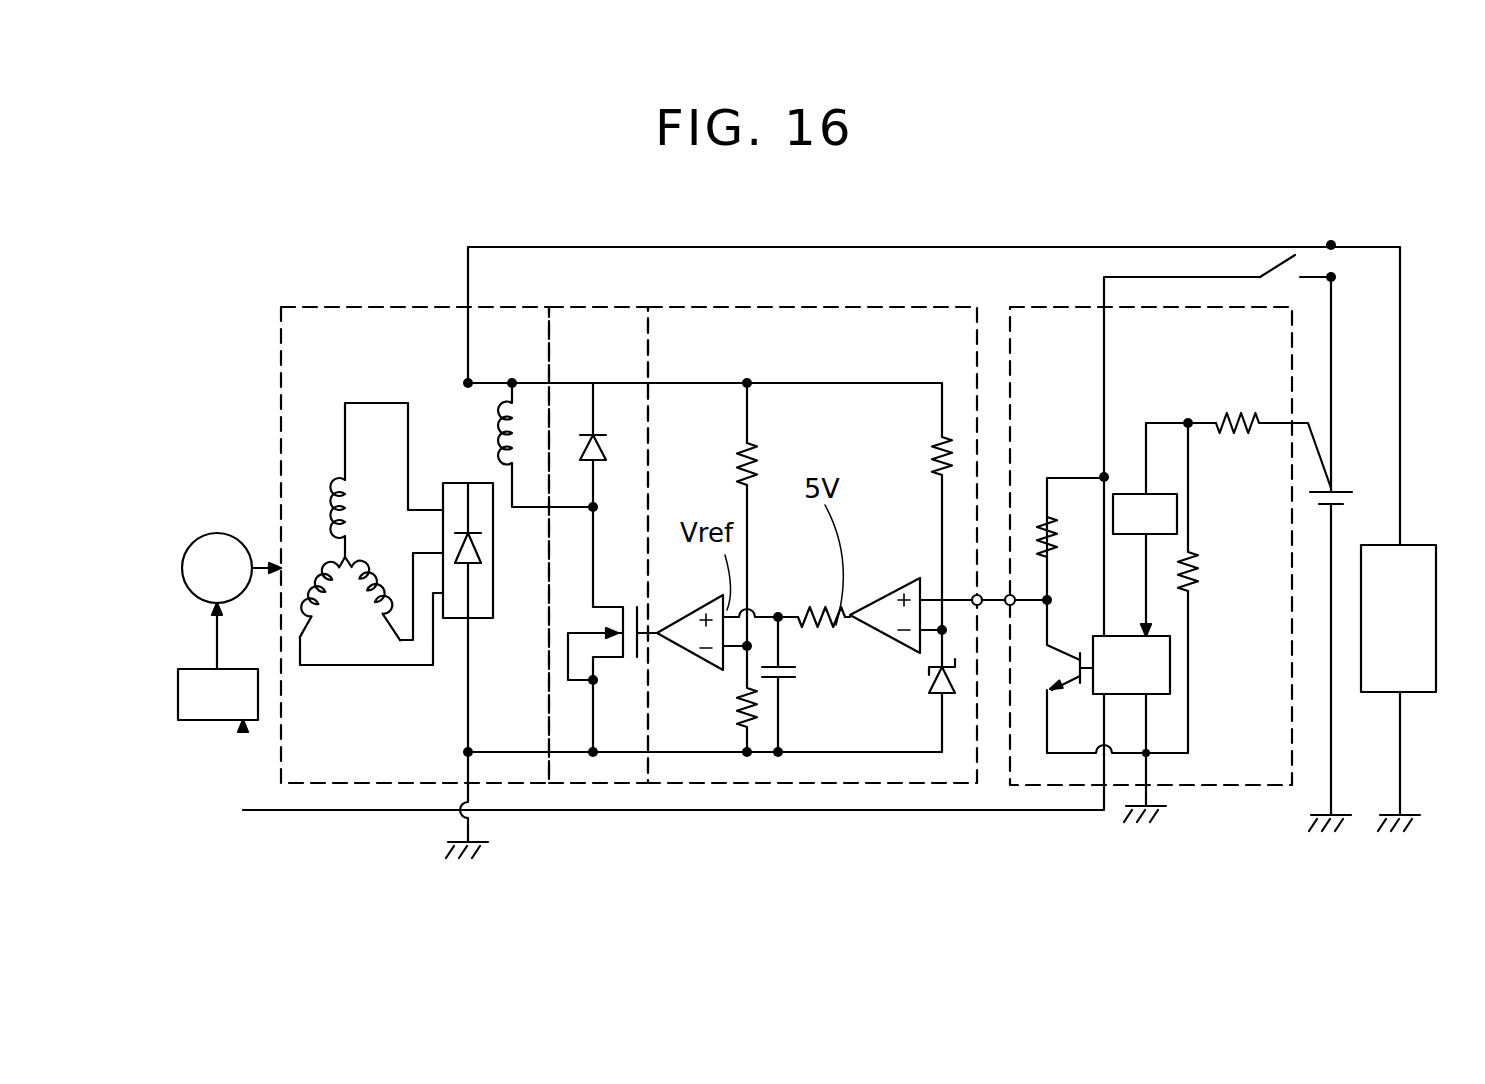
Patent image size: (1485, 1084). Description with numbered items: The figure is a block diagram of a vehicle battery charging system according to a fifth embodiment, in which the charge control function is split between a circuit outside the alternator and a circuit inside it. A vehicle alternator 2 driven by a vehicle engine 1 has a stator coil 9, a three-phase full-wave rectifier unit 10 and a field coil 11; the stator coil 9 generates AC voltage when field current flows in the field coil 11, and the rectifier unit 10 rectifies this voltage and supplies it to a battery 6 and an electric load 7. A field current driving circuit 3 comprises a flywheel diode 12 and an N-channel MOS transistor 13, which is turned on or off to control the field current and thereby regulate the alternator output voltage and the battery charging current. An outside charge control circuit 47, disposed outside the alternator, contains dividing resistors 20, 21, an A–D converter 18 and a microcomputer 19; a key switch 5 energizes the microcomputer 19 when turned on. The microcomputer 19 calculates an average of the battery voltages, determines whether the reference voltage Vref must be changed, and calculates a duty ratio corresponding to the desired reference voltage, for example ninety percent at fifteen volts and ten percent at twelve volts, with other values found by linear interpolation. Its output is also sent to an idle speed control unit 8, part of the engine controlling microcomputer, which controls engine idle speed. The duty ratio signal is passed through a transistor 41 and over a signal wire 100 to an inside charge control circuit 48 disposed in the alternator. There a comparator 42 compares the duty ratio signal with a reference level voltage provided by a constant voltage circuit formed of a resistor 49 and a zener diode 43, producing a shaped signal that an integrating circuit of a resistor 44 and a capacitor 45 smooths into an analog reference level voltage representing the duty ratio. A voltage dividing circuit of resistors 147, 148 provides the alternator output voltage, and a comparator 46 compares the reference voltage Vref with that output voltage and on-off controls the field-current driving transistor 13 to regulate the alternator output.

The vehicle engine 1 is at (208, 532).
The vehicle alternator 2 is at (281, 350).
The field current driving circuit 3 is at (630, 305).
The key switch 5 is at (1288, 262).
The battery 6 is at (1337, 480).
The electric load 7 is at (1405, 545).
The idle speed control unit 8 is at (192, 720).
The stator coil 9 is at (350, 665).
The three-phase full-wave rectifier unit 10 is at (480, 618).
The field coil 11 is at (498, 437).
The flywheel diode 12 is at (608, 440).
The N-channel MOS transistor 13 is at (600, 600).
The A–D converter 18 is at (1177, 512).
The microcomputer 19 is at (1170, 667).
The dividing resistor 20 is at (1225, 423).
The dividing resistor 21 is at (1195, 590).
The transistor 41 is at (1060, 648).
The comparator 42 is at (900, 585).
The zener diode 43 is at (935, 700).
The resistor 44 is at (822, 612).
The capacitor 45 is at (800, 672).
The comparator 46 is at (679, 650).
The outside charge control circuit 47 is at (1058, 305).
The inside charge control circuit 48 is at (838, 305).
The resistor 49 is at (930, 468).
The signal wire 100 is at (993, 590).
The resistor 147 is at (755, 470).
The resistor 148 is at (758, 712).